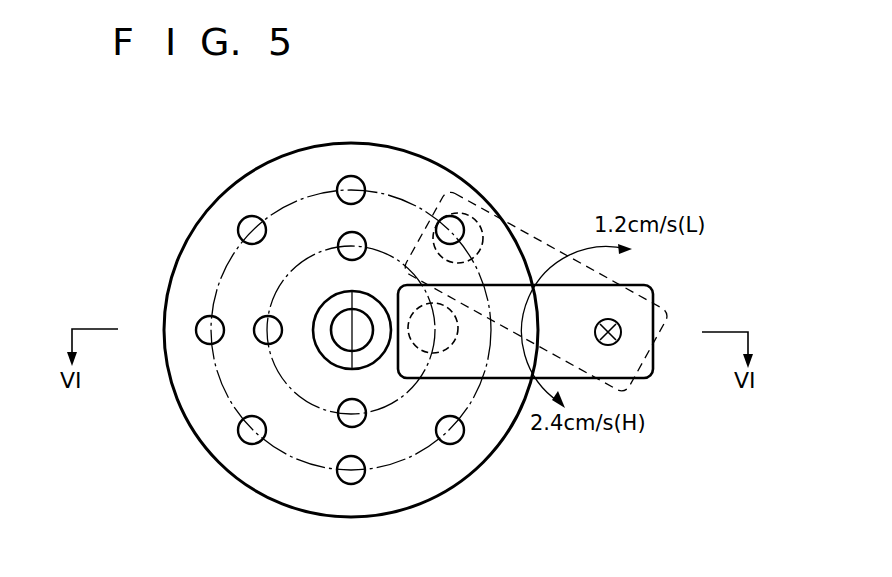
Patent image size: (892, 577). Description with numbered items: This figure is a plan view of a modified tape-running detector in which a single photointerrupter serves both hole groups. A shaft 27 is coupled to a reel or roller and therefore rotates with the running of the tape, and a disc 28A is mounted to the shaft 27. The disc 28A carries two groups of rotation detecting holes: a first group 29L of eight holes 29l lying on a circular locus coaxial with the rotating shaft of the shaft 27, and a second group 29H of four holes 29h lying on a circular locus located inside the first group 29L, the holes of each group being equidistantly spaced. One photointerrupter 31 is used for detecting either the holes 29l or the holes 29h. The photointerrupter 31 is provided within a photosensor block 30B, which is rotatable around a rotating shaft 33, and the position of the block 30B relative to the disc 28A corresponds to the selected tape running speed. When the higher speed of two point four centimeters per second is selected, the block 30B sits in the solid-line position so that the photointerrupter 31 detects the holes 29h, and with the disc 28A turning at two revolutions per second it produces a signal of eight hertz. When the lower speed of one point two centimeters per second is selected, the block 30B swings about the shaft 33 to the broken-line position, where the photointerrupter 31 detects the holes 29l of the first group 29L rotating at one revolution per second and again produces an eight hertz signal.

The disc 28A is at (270, 170).
The holes 29h is at (352, 247).
The first group of rotation detecting holes 29L is at (228, 402).
The second group of rotation detecting holes 29H is at (322, 412).
The holes 29l is at (253, 433).
The shaft 27 is at (340, 328).
The photointerrupter 31 is at (486, 237).
The rotating shaft 33 is at (620, 327).
The photosensor block 30B is at (660, 378).